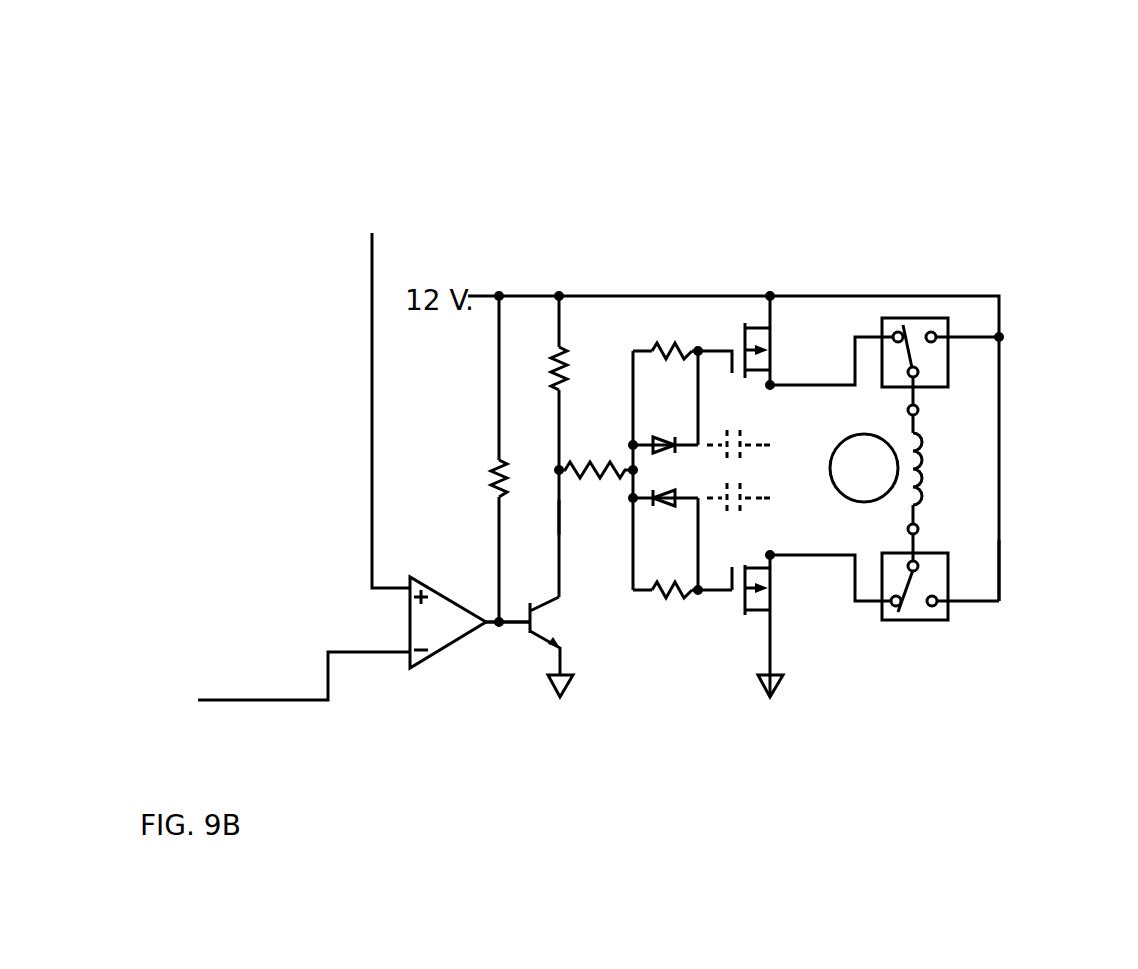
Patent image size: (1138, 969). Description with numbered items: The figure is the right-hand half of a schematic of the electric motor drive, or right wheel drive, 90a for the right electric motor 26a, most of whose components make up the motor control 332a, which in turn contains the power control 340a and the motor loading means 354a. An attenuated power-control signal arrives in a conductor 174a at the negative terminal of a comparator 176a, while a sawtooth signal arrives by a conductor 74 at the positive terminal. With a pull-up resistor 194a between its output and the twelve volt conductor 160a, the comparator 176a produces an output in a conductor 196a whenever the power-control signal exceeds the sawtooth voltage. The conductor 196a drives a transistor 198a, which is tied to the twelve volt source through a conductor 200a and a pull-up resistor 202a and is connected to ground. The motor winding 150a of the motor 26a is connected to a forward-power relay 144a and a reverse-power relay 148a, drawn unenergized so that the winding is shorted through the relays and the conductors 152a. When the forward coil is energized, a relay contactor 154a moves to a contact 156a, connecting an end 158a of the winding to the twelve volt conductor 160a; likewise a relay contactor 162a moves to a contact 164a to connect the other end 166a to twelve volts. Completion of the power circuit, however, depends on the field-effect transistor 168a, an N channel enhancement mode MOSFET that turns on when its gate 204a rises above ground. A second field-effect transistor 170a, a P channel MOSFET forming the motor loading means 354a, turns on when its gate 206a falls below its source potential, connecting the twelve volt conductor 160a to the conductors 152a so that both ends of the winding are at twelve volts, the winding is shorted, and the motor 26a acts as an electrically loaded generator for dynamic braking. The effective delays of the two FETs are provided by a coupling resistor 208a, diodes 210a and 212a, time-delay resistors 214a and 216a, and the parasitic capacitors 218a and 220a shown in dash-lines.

The conductor 74 is at (372, 236).
The conductor 174a is at (205, 700).
The comparator 176a is at (410, 668).
The pull-up resistor 194a is at (498, 470).
The conductor 196a is at (510, 625).
The transistor 198a is at (540, 640).
The conductor 200a is at (559, 517).
The pull-up resistor 202a is at (559, 346).
The gate 204a is at (733, 588).
The gate 206a is at (745, 367).
The coupling resistor 208a is at (588, 470).
The diode 210a is at (668, 503).
The diode 212a is at (660, 432).
The time-delay resistor 214a is at (665, 590).
The time-delay resistor 216a is at (692, 351).
The parasitic capacitor 218a is at (717, 508).
The parasitic capacitor 220a is at (727, 447).
The field-effect transistor 170a is at (796, 192).
The conductors 152a is at (853, 362).
The relay contactor 154a is at (900, 334).
The contact 156a is at (933, 334).
The end 158a is at (920, 410).
The forward-power relay 144a is at (1004, 230).
The motor winding 150a is at (925, 470).
The end 166a is at (921, 529).
The right electric motor 26a is at (1022, 429).
The twelve volt conductor 160a is at (998, 562).
The reverse-power relay 148a is at (984, 671).
The relay contactor 162a is at (893, 590).
The contact 164a is at (932, 608).
The motor control 332a is at (440, 70).
The power control 340a is at (518, 155).
The motor loading means 354a is at (707, 127).
The field-effect transistor 168a is at (739, 758).
The electric motor drive 90a is at (862, 781).